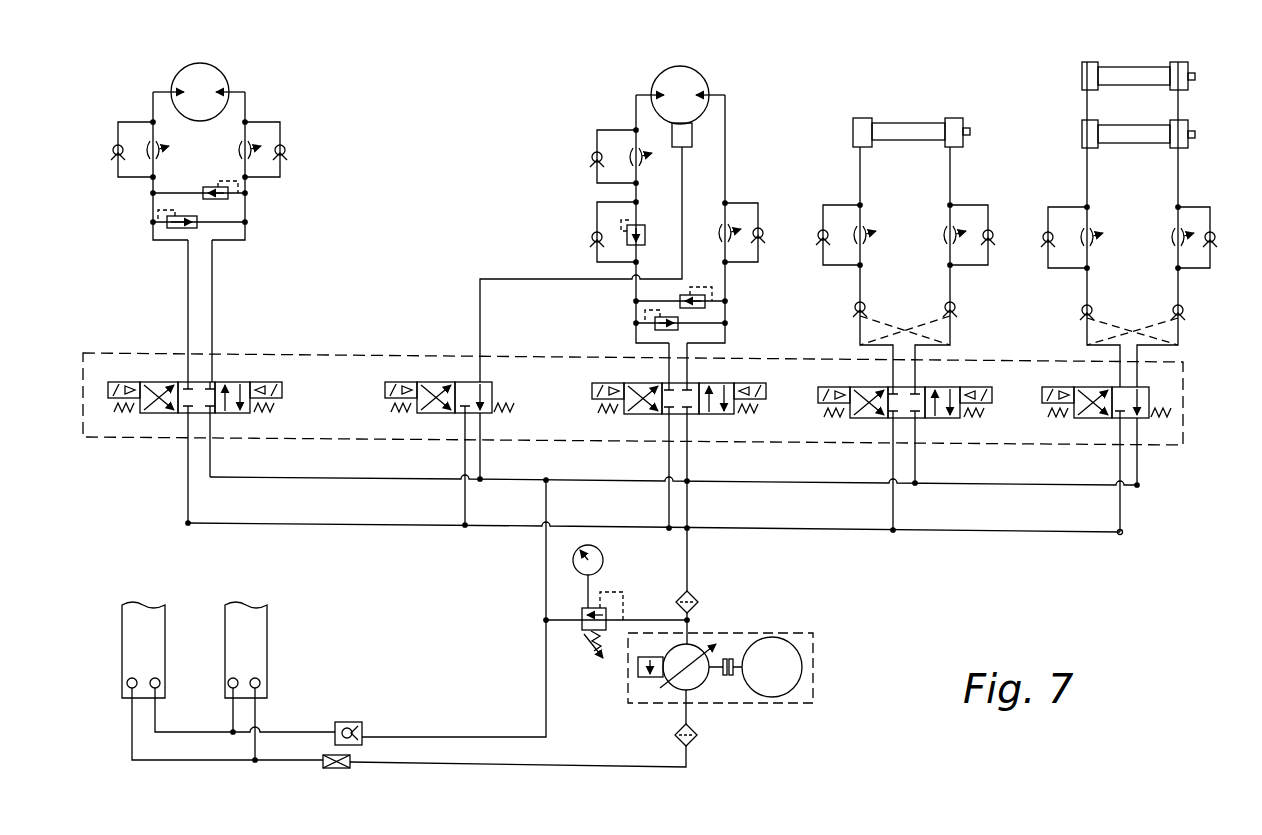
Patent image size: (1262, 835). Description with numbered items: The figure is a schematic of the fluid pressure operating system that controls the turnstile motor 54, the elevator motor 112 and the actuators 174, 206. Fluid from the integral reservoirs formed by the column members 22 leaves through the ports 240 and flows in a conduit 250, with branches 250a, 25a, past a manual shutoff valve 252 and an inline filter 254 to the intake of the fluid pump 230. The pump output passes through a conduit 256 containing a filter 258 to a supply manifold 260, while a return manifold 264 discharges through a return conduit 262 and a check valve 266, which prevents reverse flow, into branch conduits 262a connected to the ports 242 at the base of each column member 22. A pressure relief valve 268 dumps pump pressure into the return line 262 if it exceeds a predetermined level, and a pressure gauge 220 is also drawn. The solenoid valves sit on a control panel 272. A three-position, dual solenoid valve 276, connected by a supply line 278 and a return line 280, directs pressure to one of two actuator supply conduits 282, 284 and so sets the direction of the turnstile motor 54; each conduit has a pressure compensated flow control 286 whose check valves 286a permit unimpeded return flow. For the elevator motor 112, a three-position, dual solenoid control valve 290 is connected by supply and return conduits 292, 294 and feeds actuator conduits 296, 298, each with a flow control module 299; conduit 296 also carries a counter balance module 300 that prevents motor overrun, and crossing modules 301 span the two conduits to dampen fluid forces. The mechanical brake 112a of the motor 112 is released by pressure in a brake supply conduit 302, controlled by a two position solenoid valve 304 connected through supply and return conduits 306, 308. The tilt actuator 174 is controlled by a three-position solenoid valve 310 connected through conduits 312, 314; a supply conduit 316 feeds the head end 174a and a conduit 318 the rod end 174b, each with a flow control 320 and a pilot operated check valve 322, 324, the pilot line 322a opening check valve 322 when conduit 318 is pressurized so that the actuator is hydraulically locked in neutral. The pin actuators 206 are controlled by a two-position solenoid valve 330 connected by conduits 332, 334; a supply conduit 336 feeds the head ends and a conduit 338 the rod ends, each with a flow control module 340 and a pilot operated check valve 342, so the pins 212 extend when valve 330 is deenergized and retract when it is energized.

The turnstile motor 54 is at (232, 72).
The pressure compensated flow control 286 is at (296, 138).
The check valve 286a is at (112, 151).
The actuator supply conduit 282 is at (187, 327).
The actuator supply conduit 284 is at (213, 328).
The control panel 272 is at (124, 348).
The three-position, dual solenoid valve 276 is at (241, 384).
The return line 280 is at (211, 463).
The supply line 278 is at (188, 504).
The fluid return manifold 264 is at (581, 483).
The supply manifold 260 is at (737, 527).
The two position solenoid operated valve 304 is at (498, 388).
The supply conduit 306 is at (463, 463).
The return conduit 308 is at (482, 463).
The brake supply conduit 302 is at (512, 276).
The elevator motor 112 is at (701, 83).
The mechanical brake 112a is at (693, 135).
The pressure compensated flow control module 299 is at (588, 148).
The fluid counter balance module 300 is at (588, 238).
The crossing module 301 is at (672, 316).
The actuator conduit 296 is at (668, 350).
The actuator conduit 298 is at (690, 350).
The three-position, dual solenoid control valve 290 is at (737, 386).
The supply conduit 292 is at (667, 463).
The return conduit 294 is at (689, 463).
The tilt actuator 174 is at (885, 122).
The head end 174a is at (862, 117).
The rod end 174b is at (950, 117).
The supply conduit 316 is at (859, 165).
The conduit 318 is at (954, 165).
The pressure compensated flow control 320 is at (867, 222).
The pilot operated check valve 322 is at (867, 300).
The pilot operated check valve 324 is at (957, 302).
The pilot line 322a is at (880, 320).
The three-position solenoid valve 310 is at (947, 388).
The conduit 312 is at (891, 464).
The conduit 314 is at (917, 465).
The pin actuator 206 is at (1128, 64).
The pin 212 is at (1194, 78).
The supply conduit 336 is at (1090, 197).
The conduit 338 is at (1180, 197).
The pressure compensated flow control module 340 is at (1225, 243).
The pilot operated check valve 342 is at (1168, 316).
The two-position solenoid-operated valve 330 is at (1150, 393).
The conduit 332 is at (1118, 464).
The conduit 334 is at (1140, 467).
The return conduit 262 is at (543, 592).
The pressure gauge 220 is at (598, 553).
The pressure relief valve 268 is at (582, 637).
The conduit 256 is at (689, 556).
The filter 258 is at (700, 596).
The fluid pump 230 is at (762, 634).
The inline filter 254 is at (697, 740).
The conduit 250 is at (549, 764).
The manual shutoff valve 252 is at (345, 770).
The suction line 25a is at (160, 761).
The branch 250a is at (262, 725).
The branch conduit 262a is at (162, 724).
The check valve 266 is at (360, 720).
The column member 22 is at (165, 623).
The port 240 is at (127, 683).
The port 242 is at (160, 678).